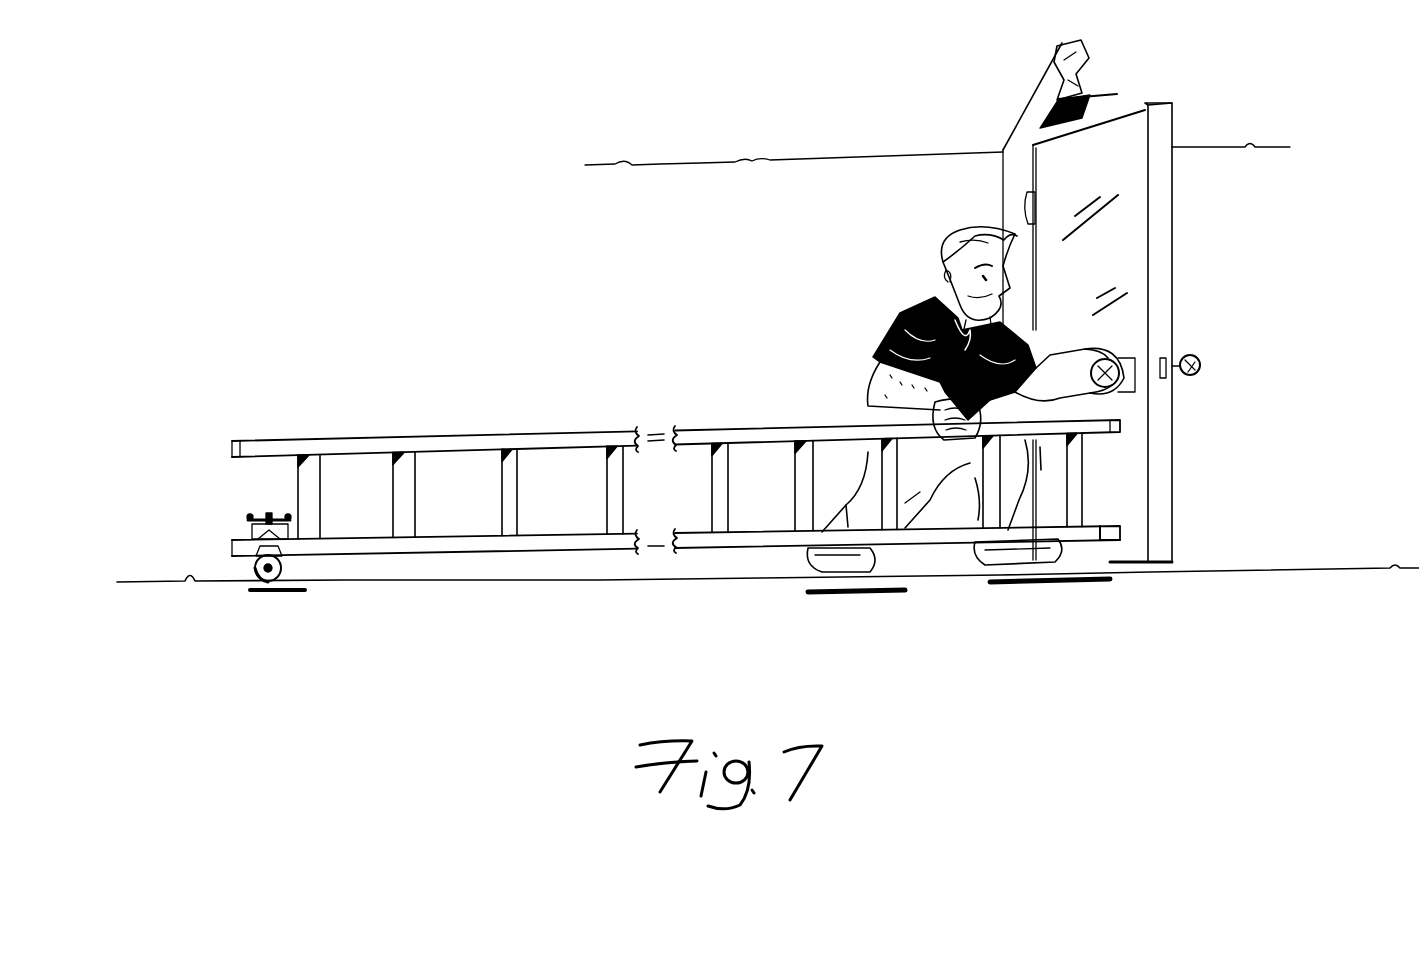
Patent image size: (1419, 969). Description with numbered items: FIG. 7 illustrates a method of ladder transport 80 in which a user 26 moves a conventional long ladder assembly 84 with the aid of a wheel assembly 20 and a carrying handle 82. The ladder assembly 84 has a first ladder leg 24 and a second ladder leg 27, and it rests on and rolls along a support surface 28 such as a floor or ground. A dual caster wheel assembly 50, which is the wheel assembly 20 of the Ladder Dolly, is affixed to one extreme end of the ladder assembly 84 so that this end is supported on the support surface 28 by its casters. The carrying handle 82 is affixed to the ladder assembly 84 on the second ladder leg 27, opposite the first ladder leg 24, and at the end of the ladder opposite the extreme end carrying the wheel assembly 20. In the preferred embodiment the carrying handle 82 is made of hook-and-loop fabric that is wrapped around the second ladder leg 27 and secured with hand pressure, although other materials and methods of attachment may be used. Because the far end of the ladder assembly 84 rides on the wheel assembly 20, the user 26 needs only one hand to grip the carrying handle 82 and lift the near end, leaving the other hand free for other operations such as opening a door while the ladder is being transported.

The wheel assembly 20 is at (606, 506).
The first ladder leg 24 is at (553, 551).
The user 26 is at (897, 322).
The second ladder leg 27 is at (373, 438).
The support surface 28 is at (1232, 569).
The dual caster wheel assembly 50 is at (240, 528).
The method of ladder transport 80 is at (815, 88).
The carrying handle 82 is at (947, 440).
The long ladder assembly 84 is at (574, 428).